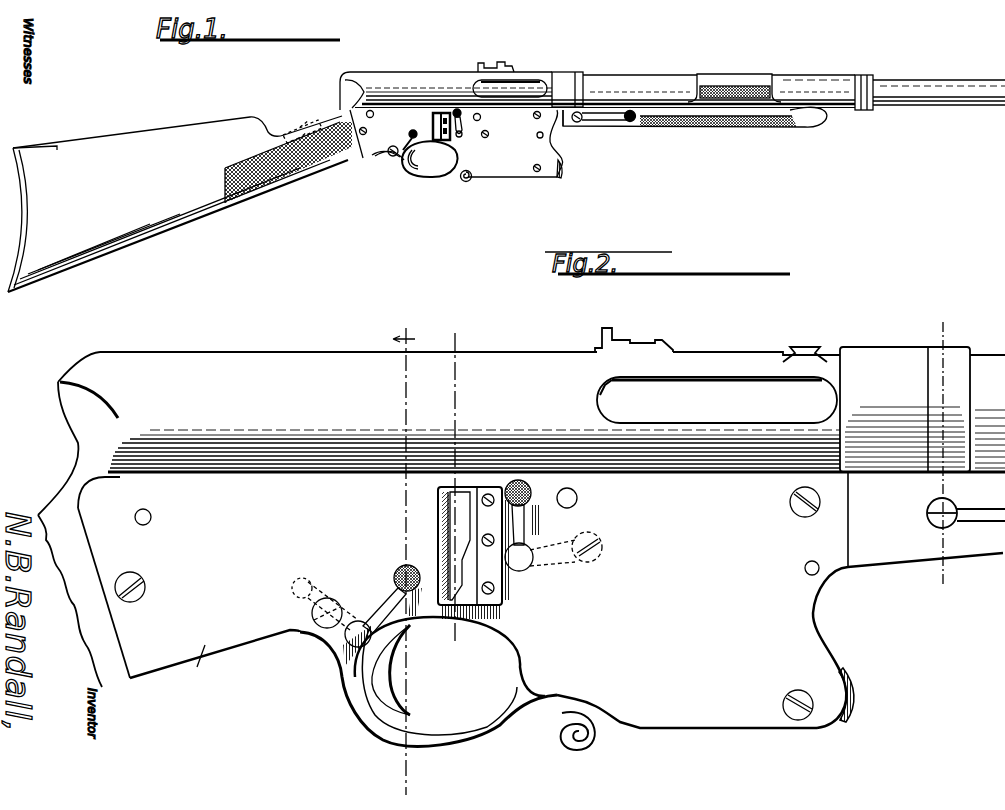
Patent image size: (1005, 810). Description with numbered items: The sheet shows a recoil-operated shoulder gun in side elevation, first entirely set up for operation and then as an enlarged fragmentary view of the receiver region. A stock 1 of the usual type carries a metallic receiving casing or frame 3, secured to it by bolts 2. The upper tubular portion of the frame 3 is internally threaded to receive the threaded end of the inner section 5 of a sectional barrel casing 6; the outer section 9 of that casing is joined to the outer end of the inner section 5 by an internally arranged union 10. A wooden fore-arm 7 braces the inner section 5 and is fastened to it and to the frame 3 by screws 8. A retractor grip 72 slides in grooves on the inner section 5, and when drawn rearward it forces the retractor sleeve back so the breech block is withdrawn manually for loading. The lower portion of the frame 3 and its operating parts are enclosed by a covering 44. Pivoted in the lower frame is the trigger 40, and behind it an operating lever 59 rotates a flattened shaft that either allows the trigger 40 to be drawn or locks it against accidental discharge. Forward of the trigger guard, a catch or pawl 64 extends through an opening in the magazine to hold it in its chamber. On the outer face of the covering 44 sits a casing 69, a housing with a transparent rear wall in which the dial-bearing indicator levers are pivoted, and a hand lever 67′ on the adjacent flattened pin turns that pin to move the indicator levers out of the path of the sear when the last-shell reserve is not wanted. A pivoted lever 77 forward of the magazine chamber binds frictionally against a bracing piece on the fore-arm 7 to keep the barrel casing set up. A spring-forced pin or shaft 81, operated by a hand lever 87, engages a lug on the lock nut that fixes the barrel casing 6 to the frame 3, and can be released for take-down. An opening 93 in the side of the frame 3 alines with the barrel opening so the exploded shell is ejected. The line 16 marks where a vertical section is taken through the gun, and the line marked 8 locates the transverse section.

In FIG. 1, the stock 1 is at (155, 134).
In FIG. 1, the bolts 2 is at (300, 126).
In FIG. 1, the frame 3 is at (344, 85).
In FIG. 2, the frame 3 is at (83, 448).
In FIG. 1, the inner section of barrel casing 5 is at (643, 75).
In FIG. 1, the barrel casing 6 is at (814, 76).
In FIG. 1, the fore-arm 7 is at (640, 128).
In FIG. 2, the screws 8 is at (922, 453).
In FIG. 1, the outer section of barrel casing 9 is at (960, 79).
In FIG. 1, the union 10 is at (864, 78).
In FIG. 2, the union 10 is at (458, 483).
In FIG. 2, the section line 16— 16 is at (408, 552).
In FIG. 1, the trigger 40 is at (427, 170).
In FIG. 2, the trigger 40 is at (392, 683).
In FIG. 1, the covering 44 is at (517, 170).
In FIG. 2, the covering 44 is at (540, 600).
In FIG. 1, the operating lever 59 is at (398, 156).
In FIG. 2, the operating lever 59 is at (398, 592).
In FIG. 1, the catch or pawl 64 is at (467, 182).
In FIG. 2, the catch or pawl 64 is at (562, 735).
In FIG. 1, the hand lever 67′ is at (465, 128).
In FIG. 2, the hand lever 67′ is at (524, 521).
In FIG. 1, the casing 69 is at (433, 120).
In FIG. 2, the casing 69 is at (438, 497).
In FIG. 1, the retractor grip 72 is at (736, 84).
In FIG. 1, the pivoted lever 77 is at (566, 173).
In FIG. 2, the pivoted lever 77 is at (858, 682).
In FIG. 1, the pin or shaft 81 is at (578, 123).
In FIG. 2, the pin or shaft 81 is at (931, 527).
In FIG. 1, the hand lever 87 is at (630, 122).
In FIG. 1, the opening 93 is at (544, 78).
In FIG. 2, the opening 93 is at (711, 378).